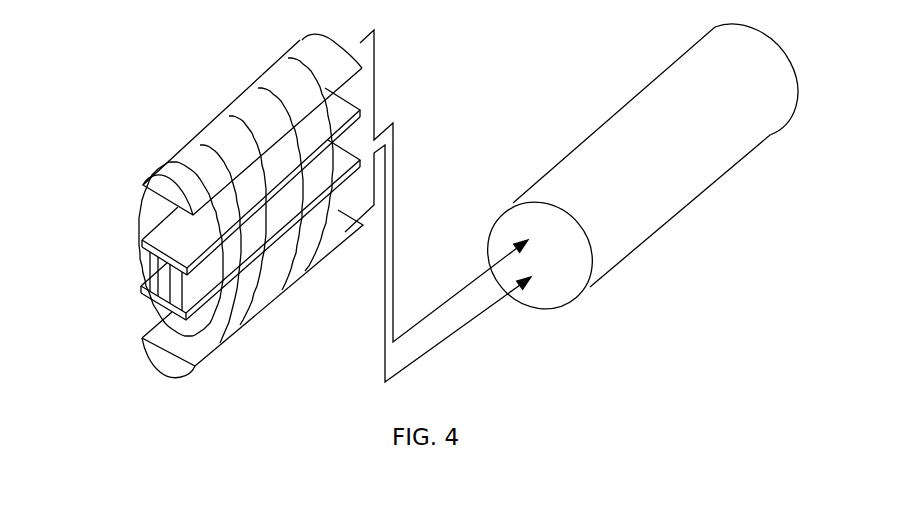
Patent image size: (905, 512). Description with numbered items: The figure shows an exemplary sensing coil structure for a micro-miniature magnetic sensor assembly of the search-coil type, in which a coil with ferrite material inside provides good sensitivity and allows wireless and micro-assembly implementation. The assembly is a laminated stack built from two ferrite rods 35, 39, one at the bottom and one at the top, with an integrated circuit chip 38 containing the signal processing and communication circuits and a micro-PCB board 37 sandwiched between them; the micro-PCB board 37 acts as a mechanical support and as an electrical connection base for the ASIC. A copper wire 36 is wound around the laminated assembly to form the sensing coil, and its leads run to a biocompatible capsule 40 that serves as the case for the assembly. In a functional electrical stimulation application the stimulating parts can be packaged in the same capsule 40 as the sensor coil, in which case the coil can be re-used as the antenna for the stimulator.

The ferrite rod 35 is at (143, 358).
The copper wire 36 is at (130, 300).
The micro-PCB board 37 is at (141, 276).
The integrated circuit chip 38 is at (140, 233).
The ferrite rod 39 is at (140, 186).
The capsule 40 is at (593, 134).